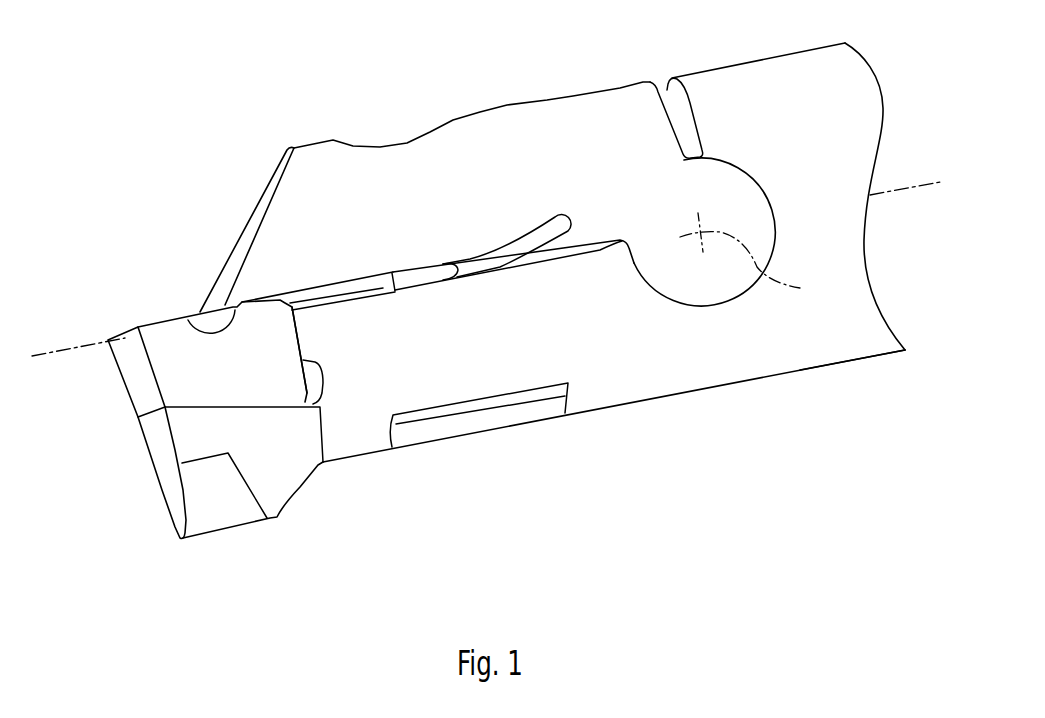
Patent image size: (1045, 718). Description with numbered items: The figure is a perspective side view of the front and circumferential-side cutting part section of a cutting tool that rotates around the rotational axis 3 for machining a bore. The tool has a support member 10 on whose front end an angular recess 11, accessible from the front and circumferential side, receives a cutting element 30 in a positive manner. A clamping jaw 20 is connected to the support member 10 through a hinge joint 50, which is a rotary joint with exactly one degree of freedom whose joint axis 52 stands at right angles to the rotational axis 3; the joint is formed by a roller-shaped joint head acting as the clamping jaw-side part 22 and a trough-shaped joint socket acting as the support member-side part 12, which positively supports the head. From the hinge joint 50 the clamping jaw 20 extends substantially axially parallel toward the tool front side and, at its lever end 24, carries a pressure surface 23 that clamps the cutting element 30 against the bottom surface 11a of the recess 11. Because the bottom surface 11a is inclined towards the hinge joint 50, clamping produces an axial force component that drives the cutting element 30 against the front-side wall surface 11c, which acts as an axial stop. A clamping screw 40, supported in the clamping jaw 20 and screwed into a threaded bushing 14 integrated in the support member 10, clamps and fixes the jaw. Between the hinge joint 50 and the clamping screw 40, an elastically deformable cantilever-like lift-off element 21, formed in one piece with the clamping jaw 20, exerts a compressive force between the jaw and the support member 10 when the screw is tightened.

The rotational axis 3 is at (900, 183).
The support member 10 is at (678, 372).
The angular recess 11 is at (315, 380).
The bottom surface 11a is at (193, 397).
The front-side wall surface 11c is at (300, 357).
The support member-side part 12 is at (743, 293).
The threaded bushing 14 is at (527, 413).
The clamping jaw 20 is at (547, 113).
The lift-off element 21 is at (478, 270).
The clamping jaw-side part 22 is at (743, 200).
The pressure surface 23 is at (191, 326).
The lever end 24 is at (297, 182).
The cutting element 30 is at (142, 383).
The clamping screw 40 is at (418, 280).
The hinge joint 50 is at (730, 146).
The joint axis 52 is at (758, 258).